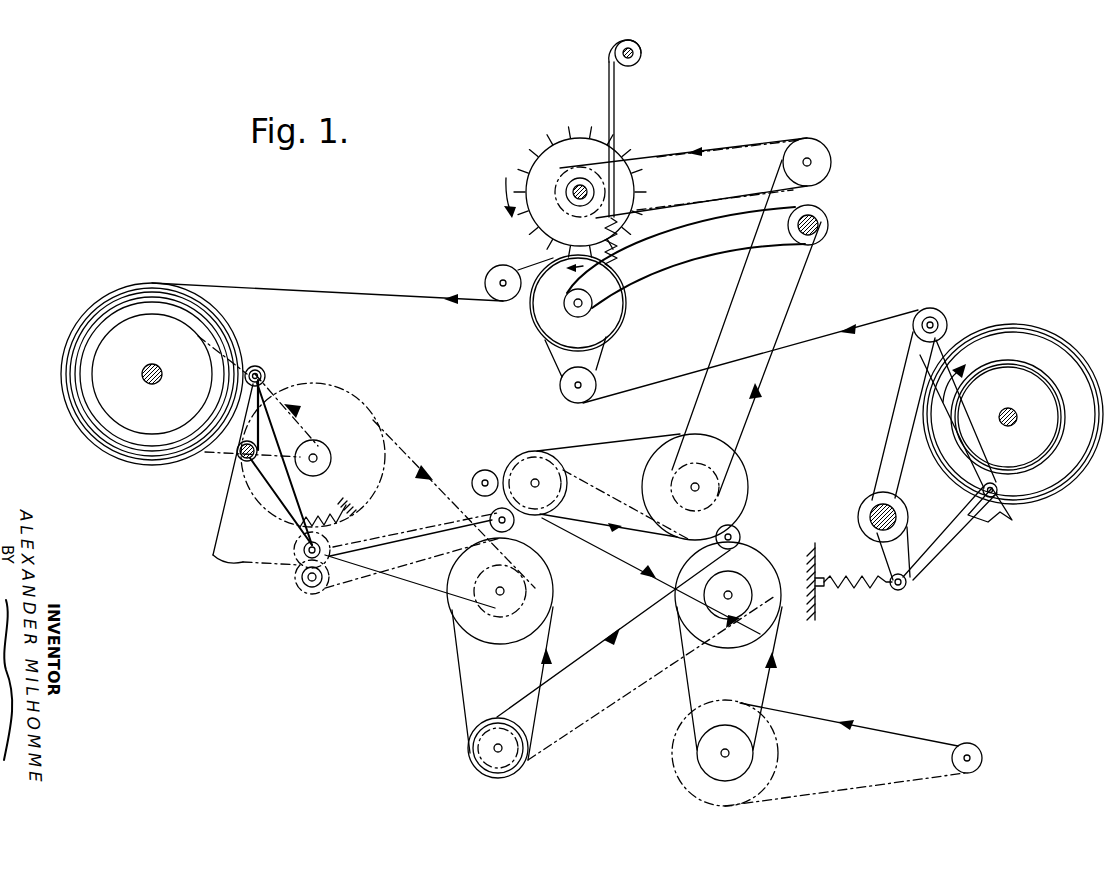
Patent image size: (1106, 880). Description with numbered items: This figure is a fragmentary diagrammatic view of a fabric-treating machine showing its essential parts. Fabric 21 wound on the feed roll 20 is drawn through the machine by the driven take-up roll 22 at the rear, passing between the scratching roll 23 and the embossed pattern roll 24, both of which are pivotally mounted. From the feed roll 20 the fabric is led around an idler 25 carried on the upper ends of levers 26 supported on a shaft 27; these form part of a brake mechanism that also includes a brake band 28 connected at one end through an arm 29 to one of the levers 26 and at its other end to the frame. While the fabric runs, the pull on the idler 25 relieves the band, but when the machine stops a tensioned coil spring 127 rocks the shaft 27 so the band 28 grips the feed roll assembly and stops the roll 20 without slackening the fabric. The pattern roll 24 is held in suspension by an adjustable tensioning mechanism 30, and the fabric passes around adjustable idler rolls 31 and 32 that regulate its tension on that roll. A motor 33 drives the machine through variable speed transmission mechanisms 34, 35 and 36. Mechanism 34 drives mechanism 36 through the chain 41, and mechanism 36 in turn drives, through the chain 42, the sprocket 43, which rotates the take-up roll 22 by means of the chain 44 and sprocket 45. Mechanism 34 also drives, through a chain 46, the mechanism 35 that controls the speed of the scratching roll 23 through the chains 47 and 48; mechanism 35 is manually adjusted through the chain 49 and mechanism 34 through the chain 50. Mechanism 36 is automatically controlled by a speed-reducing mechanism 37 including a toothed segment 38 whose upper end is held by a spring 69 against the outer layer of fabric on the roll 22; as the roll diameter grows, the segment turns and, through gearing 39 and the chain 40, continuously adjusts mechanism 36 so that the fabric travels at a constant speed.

The feed roll 20 is at (1006, 378).
The fabric 21 is at (888, 318).
The take-up roll 22 is at (152, 300).
The scratching roll 23 is at (538, 155).
The embossed pattern roll 24 is at (618, 325).
The idler 25 is at (940, 310).
The levers 26 is at (890, 435).
The shaft 27 is at (872, 508).
The brake band 28 is at (940, 555).
The arm 29 is at (900, 553).
The adjustable tensioning mechanism 30 is at (618, 110).
The idler roll 31 is at (596, 380).
The idler roll 32 is at (495, 268).
The motor 33 is at (962, 745).
The variable speed transmission mechanism 34 is at (768, 684).
The variable speed transmission mechanism 35 is at (620, 460).
The variable speed transmission mechanism 36 is at (474, 680).
The speed-reducing mechanism 37 is at (220, 516).
The toothed segment 38 is at (228, 530).
The gearing 39 is at (300, 585).
The chain 40 is at (378, 578).
The chain 41 is at (630, 686).
The chain 42 is at (395, 457).
The sprocket 43 is at (355, 420).
The chain 44 is at (262, 410).
The sprocket 45 is at (175, 316).
The chain 46 is at (614, 556).
The chain 47 is at (790, 296).
The chain 48 is at (740, 148).
The chain 49 is at (472, 495).
The chain 50 is at (733, 553).
The spring 69 is at (330, 505).
The tensioned coil spring 127 is at (860, 572).